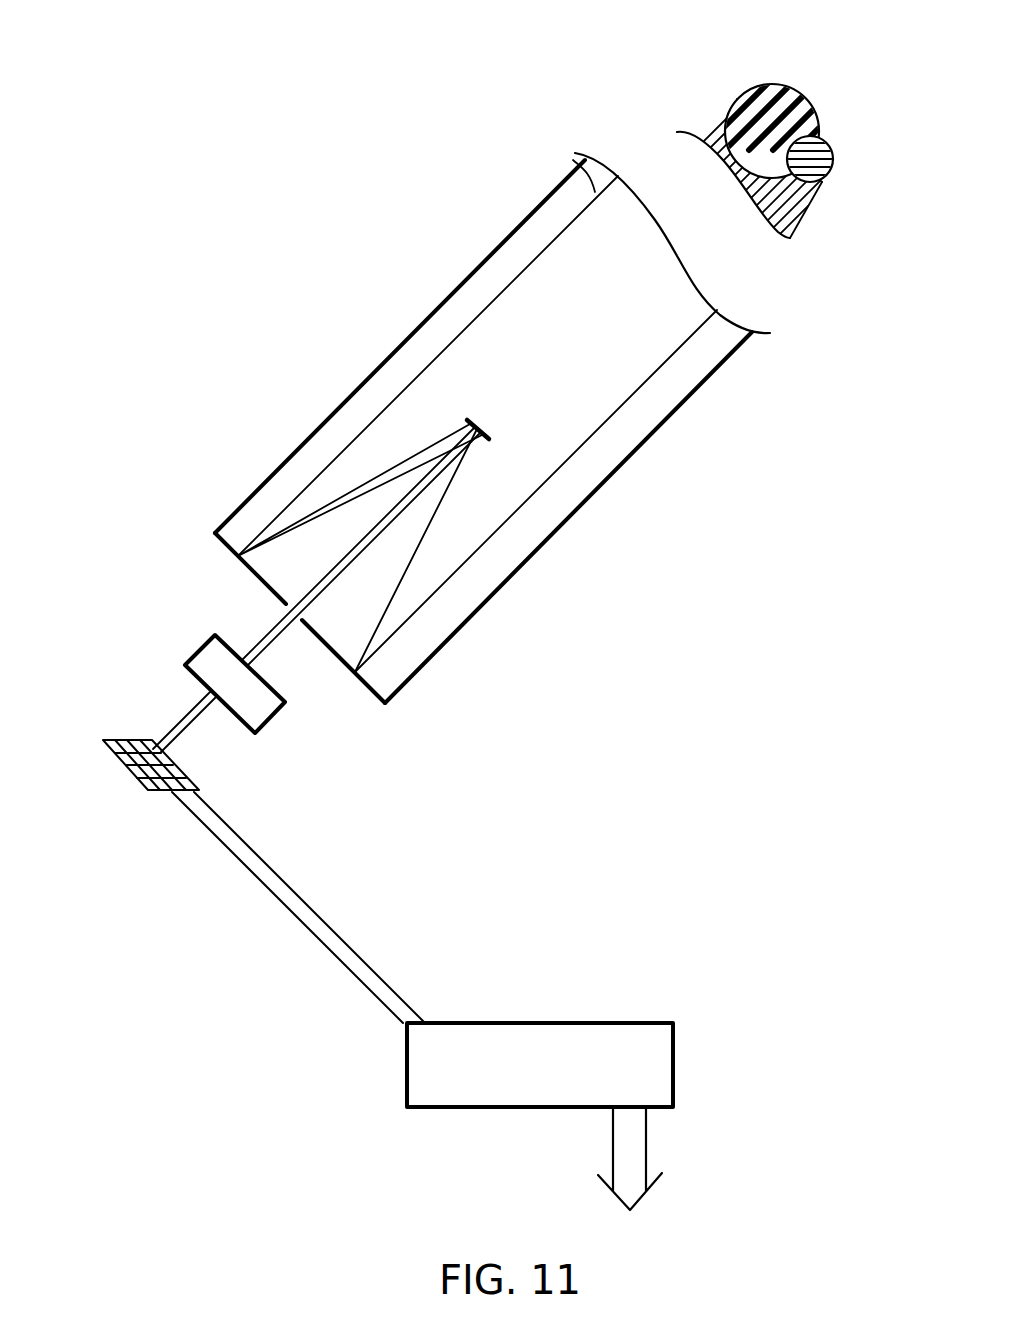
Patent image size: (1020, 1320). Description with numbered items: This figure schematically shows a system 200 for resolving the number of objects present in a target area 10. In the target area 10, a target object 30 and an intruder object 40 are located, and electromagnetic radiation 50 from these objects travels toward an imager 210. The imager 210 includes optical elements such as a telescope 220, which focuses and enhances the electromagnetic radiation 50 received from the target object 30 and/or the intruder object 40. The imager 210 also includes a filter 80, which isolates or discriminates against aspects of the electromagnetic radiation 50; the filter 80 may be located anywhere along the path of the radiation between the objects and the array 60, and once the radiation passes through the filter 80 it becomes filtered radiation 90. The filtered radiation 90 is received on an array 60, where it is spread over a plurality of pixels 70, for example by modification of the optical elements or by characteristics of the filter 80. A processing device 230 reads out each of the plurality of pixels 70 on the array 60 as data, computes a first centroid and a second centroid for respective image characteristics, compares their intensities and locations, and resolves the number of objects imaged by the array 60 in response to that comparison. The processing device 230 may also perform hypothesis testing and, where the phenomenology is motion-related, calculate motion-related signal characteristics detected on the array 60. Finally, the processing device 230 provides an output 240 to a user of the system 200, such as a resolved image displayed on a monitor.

The target area 10 is at (842, 84).
The target object 30 is at (762, 104).
The intruder object 40 is at (833, 150).
The electromagnetic radiation 50 is at (718, 126).
The array 60 is at (114, 727).
The plurality of pixels 70 is at (142, 785).
The filter 80 is at (262, 722).
The filtered radiation 90 is at (182, 720).
The system 200 is at (580, 720).
The imager 210 is at (141, 582).
The telescope 220 is at (345, 402).
The processing device 230 is at (547, 1033).
The output 240 is at (640, 1148).